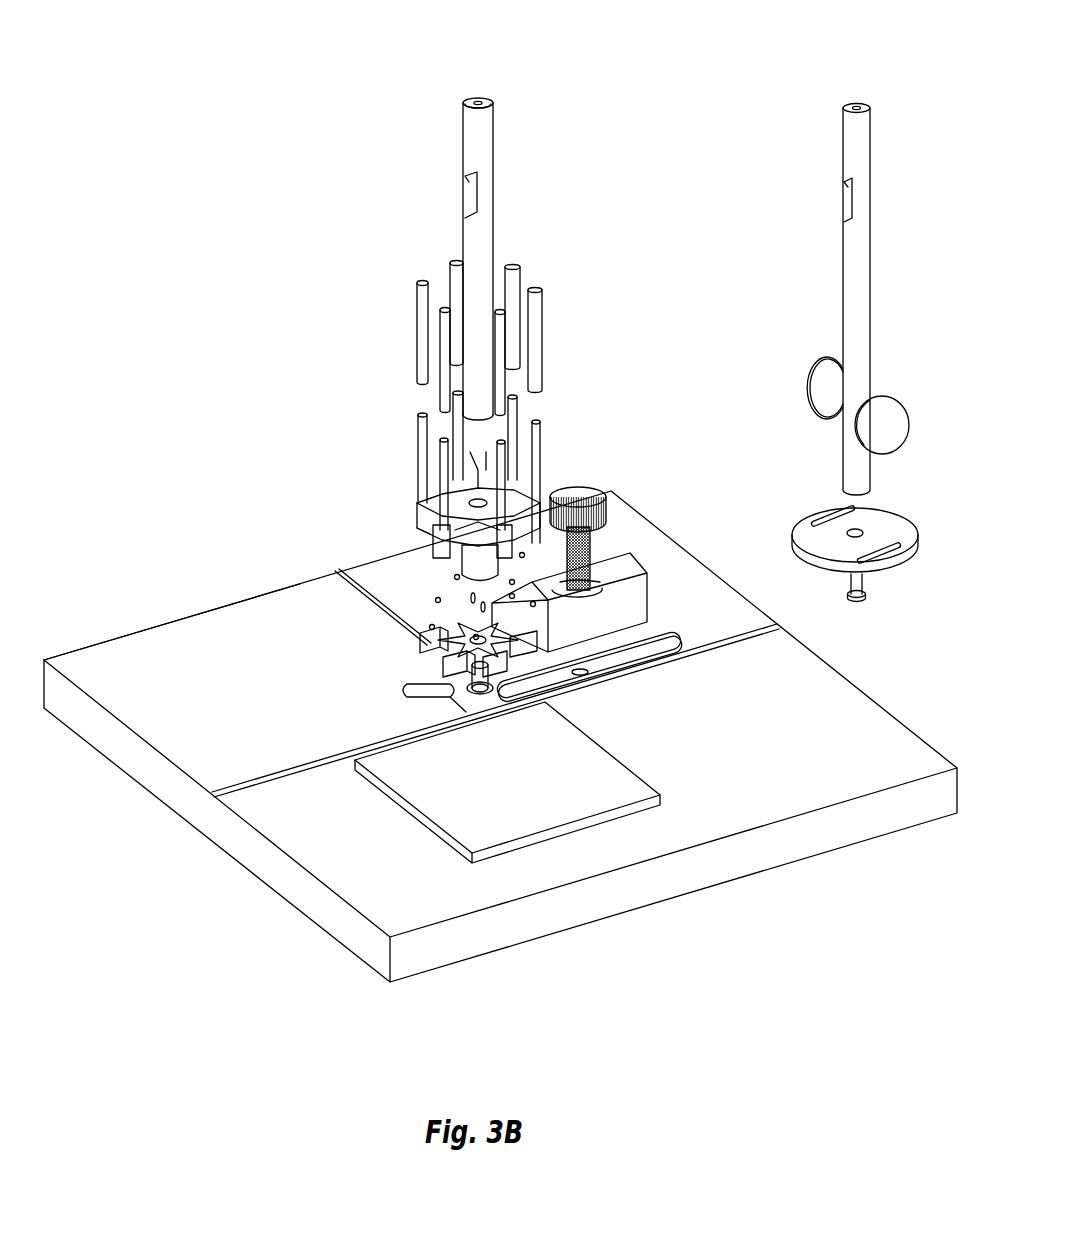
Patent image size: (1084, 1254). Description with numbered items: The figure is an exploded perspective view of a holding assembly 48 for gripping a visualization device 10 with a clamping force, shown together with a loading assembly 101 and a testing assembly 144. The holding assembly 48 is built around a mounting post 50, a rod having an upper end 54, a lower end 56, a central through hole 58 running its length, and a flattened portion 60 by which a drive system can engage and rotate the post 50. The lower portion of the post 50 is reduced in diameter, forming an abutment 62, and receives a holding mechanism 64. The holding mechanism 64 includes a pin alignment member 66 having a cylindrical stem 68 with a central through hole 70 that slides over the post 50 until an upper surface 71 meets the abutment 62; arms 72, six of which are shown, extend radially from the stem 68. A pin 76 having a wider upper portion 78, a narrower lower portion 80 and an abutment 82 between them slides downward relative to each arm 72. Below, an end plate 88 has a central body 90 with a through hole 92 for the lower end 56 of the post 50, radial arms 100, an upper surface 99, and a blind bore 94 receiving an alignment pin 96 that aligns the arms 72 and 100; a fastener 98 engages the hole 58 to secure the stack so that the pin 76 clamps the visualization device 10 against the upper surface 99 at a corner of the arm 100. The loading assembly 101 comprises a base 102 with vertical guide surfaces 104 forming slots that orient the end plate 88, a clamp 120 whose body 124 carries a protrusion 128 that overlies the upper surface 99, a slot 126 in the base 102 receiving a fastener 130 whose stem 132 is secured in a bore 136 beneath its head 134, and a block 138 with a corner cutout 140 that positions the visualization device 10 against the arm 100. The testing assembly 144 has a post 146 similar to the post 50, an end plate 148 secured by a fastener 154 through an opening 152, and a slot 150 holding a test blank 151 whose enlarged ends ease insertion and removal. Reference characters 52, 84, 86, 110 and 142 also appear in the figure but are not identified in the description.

The visualization device 10 is at (468, 582).
The holding assembly 48 is at (430, 338).
The mounting post 50 is at (520, 152).
The shaft 52 is at (463, 152).
The upper end 54 is at (481, 101).
The lower end 56 is at (470, 501).
The central through hole 58 is at (477, 101).
The flattened portion 60 is at (466, 196).
The abutment 62 is at (486, 417).
The holding mechanism 64 is at (465, 632).
The pin alignment member 66 is at (522, 552).
The stem 68 is at (465, 560).
The central through hole 70 is at (488, 486).
The upper surface 71 is at (430, 512).
The arm 72 is at (428, 520).
The pin 76 is at (416, 468).
The upper portion 78 is at (420, 452).
The lower portion 80 is at (420, 486).
The abutment 82 is at (424, 470).
The pin 84 is at (502, 484).
The upper pins 86 is at (388, 352).
The end plate 88 is at (425, 673).
The central body 90 is at (470, 670).
The central through hole 92 is at (445, 648).
The blind bore 94 is at (436, 620).
The alignment pin 96 is at (418, 596).
The fastener 98 is at (488, 692).
The upper surface 99 is at (432, 630).
The arm 100 is at (436, 653).
The loading assembly 101 is at (140, 634).
The base 102 is at (88, 740).
The vertical guide surfaces 104 is at (270, 795).
The ring 110 is at (494, 700).
The clamp 120 is at (646, 546).
The body 124 is at (650, 600).
The slot 126 is at (640, 593).
The protrusion 128 is at (512, 598).
The fastener 130 is at (655, 578).
The stem 132 is at (598, 596).
The head 134 is at (600, 492).
The bore 136 is at (620, 660).
The block 138 is at (512, 822).
The cutout 140 is at (578, 678).
The screw 142 is at (476, 640).
The testing assembly 144 is at (870, 250).
The post 146 is at (870, 168).
The end plate 148 is at (804, 533).
The slot 150 is at (904, 527).
The test blank 151 is at (898, 398).
The opening 152 is at (862, 533).
The fastener 154 is at (866, 590).